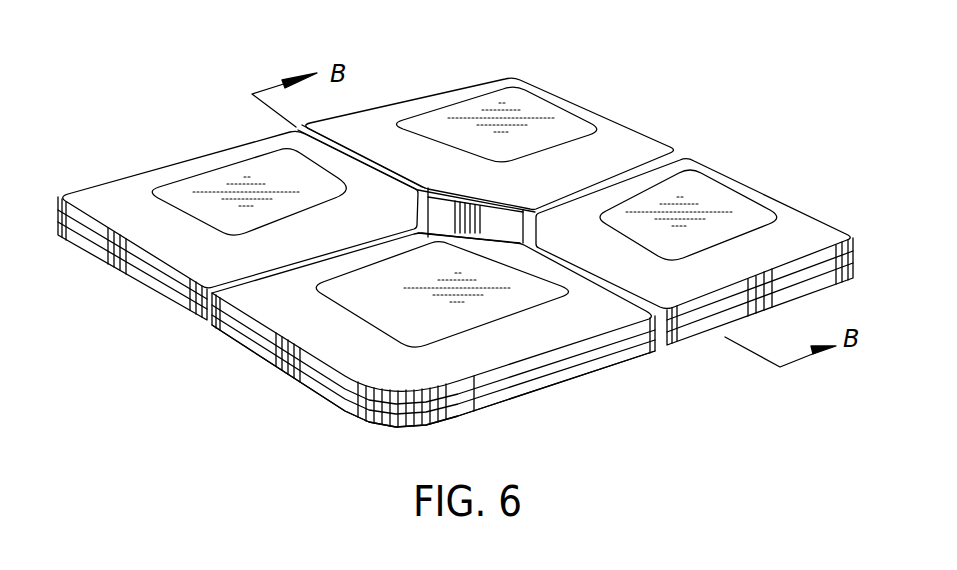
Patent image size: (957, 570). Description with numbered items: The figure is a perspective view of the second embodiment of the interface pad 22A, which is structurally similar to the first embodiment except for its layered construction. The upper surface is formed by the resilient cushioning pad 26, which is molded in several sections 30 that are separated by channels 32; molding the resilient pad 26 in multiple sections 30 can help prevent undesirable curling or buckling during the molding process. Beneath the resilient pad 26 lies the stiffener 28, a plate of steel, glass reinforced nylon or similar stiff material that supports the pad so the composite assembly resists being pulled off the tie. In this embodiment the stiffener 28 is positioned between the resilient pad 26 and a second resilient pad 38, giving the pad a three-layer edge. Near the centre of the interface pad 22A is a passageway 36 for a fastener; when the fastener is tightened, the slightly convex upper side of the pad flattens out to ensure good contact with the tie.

The section 30 is at (153, 167).
The interface pad (second embodiment) 22A is at (650, 118).
The channel 32 is at (295, 127).
The passageway 36 is at (502, 227).
The resilient cushioning pad 26 is at (493, 377).
The second resilient pad 38 is at (602, 362).
The stiffener 28 is at (545, 377).